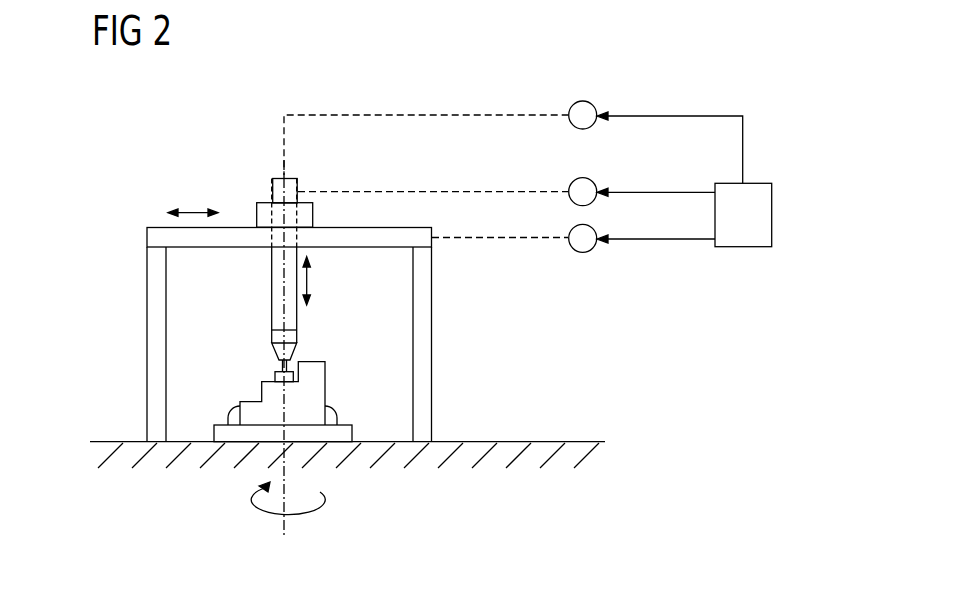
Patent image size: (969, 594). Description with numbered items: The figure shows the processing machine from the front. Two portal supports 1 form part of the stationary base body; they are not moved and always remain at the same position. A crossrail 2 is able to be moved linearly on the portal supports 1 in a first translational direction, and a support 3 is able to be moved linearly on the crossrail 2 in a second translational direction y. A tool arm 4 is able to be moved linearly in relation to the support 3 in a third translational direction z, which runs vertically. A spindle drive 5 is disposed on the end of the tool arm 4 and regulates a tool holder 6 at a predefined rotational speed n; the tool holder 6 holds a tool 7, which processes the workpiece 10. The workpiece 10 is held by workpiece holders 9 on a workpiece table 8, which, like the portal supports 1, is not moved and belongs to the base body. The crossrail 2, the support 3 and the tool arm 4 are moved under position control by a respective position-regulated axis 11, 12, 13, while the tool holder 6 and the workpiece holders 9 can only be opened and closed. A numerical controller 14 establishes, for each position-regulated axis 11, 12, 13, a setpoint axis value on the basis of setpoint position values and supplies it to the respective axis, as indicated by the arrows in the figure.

The portal supports 1 is at (147, 338).
The crossrail 2 is at (246, 226).
The support 3 is at (262, 201).
The tool arm 4 is at (272, 275).
The spindle drive 5 is at (278, 333).
The tool holder 6 is at (278, 353).
The tool 7 is at (275, 377).
The workpiece table 8 is at (352, 435).
The workpiece holders 9 is at (228, 412).
The workpiece 10 is at (313, 362).
The position-regulated axis 11 is at (583, 253).
The position-regulated axis 12 is at (572, 182).
The position-regulated axis 13 is at (583, 100).
The numerical controller 14 is at (745, 248).
The second translational direction y is at (193, 209).
The third translational direction z is at (310, 278).
The rotational speed n is at (320, 497).